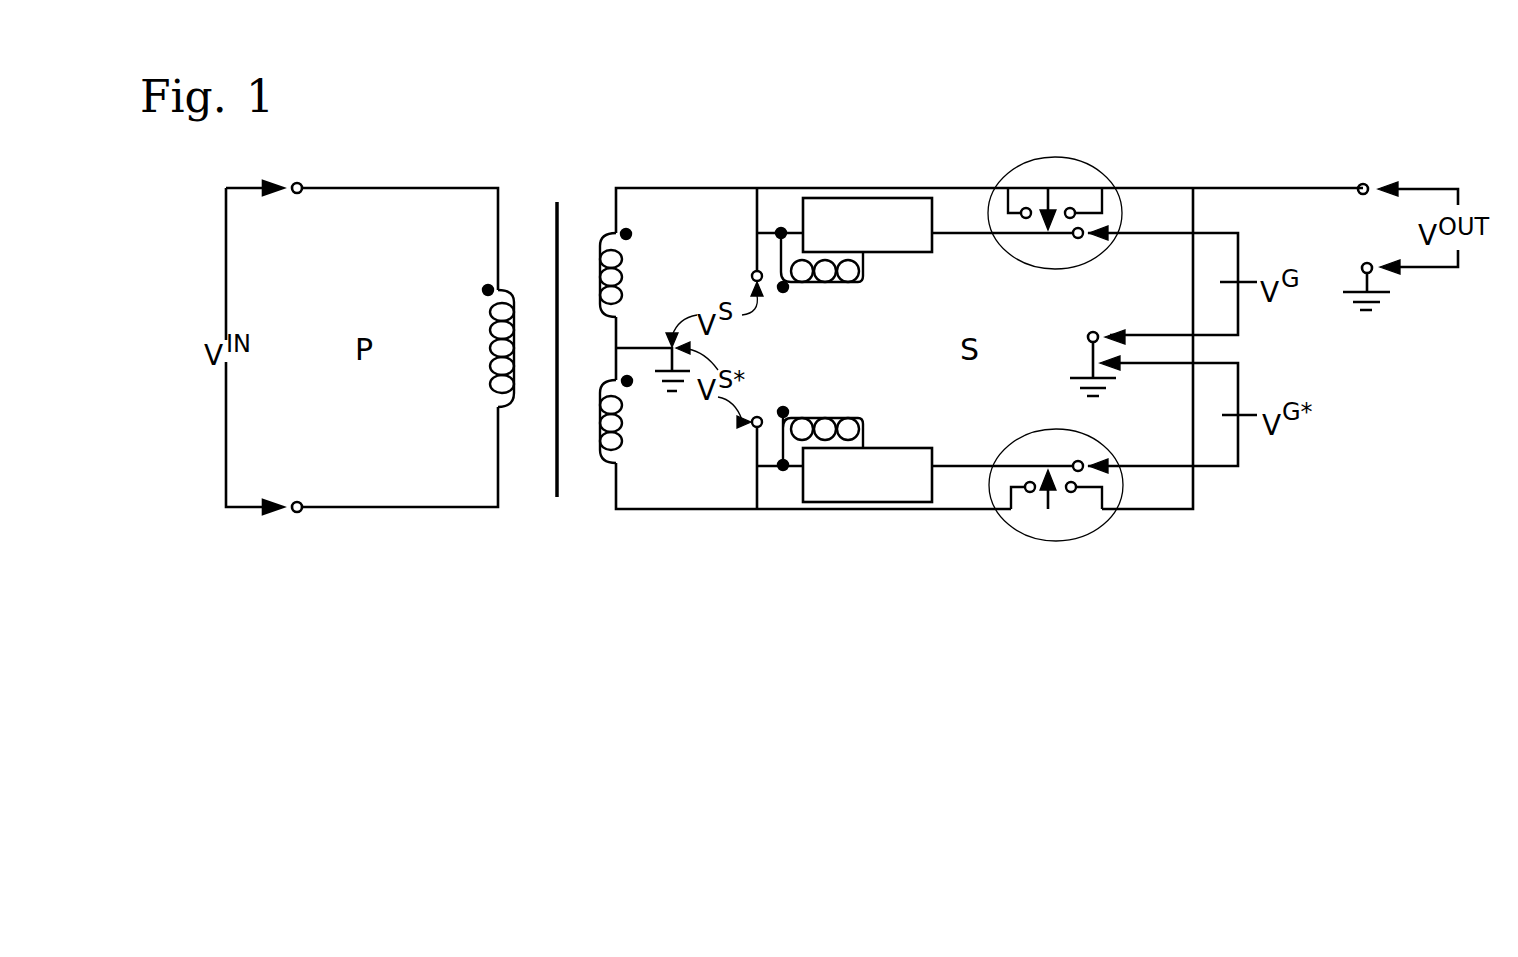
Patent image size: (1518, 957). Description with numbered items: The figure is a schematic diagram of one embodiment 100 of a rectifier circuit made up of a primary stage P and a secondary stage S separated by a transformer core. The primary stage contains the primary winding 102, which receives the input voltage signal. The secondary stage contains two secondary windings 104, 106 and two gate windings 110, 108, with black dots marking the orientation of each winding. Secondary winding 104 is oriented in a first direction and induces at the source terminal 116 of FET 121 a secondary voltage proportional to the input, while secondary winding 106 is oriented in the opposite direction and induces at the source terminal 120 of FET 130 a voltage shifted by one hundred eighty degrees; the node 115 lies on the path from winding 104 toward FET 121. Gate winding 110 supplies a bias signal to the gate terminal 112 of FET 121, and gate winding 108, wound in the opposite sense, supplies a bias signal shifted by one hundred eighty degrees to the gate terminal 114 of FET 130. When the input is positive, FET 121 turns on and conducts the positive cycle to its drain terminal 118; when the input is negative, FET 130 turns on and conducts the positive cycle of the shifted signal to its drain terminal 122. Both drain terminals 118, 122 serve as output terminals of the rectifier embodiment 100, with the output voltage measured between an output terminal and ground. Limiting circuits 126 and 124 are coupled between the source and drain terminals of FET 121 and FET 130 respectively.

The rectifier circuit embodiment 100 is at (774, 562).
The primary winding 102 is at (492, 310).
The secondary winding 104 is at (625, 255).
The secondary winding 106 is at (625, 403).
The gate winding 108 is at (848, 420).
The gate winding 110 is at (845, 283).
The gate terminal 112 is at (1079, 240).
The gate terminal 114 is at (1080, 460).
The first secondary node 115 is at (752, 275).
The source terminal 116 is at (1026, 207).
The drain terminal 118 is at (1070, 208).
The source terminal 120 is at (759, 418).
The FET 121 is at (1055, 157).
The drain terminal 122 is at (1071, 493).
The limiting circuit 124 is at (912, 448).
The limiting circuit 126 is at (910, 252).
The FET 130 is at (1058, 541).